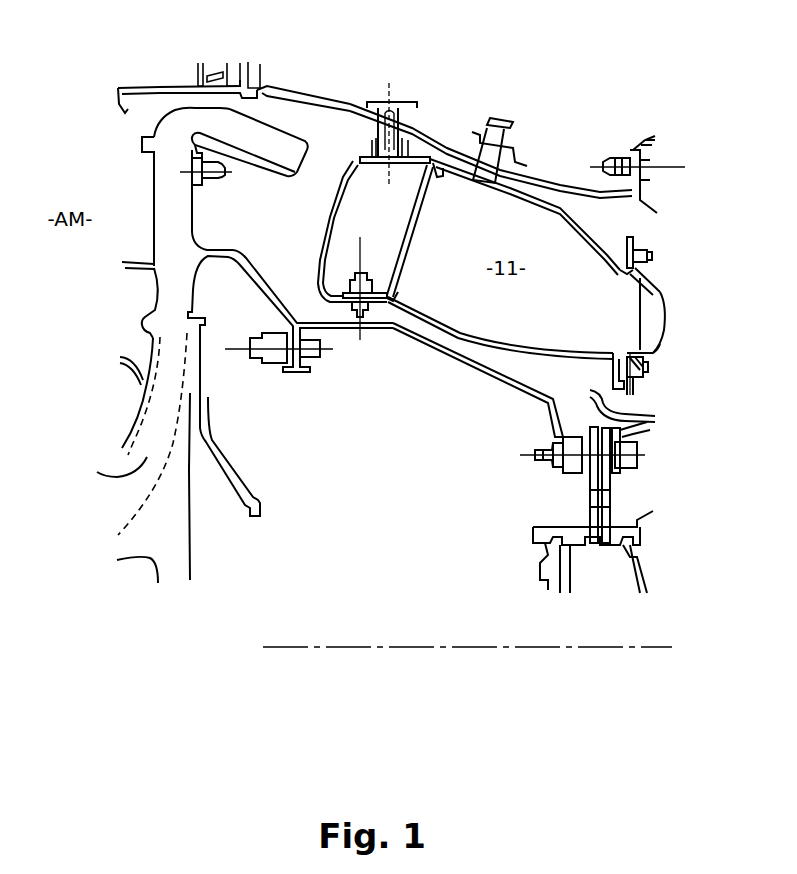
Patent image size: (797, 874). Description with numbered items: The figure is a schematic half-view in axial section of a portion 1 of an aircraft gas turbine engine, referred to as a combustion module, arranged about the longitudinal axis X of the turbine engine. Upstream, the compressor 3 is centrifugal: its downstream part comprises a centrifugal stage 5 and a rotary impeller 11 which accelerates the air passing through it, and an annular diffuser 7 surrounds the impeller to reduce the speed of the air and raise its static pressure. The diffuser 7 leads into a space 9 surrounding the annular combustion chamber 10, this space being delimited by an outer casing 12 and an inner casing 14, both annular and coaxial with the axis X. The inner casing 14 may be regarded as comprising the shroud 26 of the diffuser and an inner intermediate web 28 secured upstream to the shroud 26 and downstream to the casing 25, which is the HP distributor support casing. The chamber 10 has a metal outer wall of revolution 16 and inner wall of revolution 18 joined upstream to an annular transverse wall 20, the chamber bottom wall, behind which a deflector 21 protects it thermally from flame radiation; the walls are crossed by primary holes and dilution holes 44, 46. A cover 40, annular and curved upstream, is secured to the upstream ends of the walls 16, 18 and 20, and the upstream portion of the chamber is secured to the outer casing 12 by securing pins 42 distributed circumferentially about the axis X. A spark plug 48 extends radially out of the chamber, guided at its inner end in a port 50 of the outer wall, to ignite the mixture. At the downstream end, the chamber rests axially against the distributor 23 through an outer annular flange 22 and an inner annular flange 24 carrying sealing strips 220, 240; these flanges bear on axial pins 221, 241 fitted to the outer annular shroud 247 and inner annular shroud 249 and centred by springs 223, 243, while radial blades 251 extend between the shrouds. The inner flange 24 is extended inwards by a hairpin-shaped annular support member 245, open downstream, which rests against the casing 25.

The portion of a gas turbine engine 1 is at (586, 129).
The compressor 3 is at (108, 509).
The centrifugal stage 5 is at (123, 402).
The annular diffuser 7 is at (141, 173).
The space 9 is at (231, 163).
The annular combustion chamber 10 is at (447, 138).
The rotary impeller 11 is at (147, 457).
The outer casing 12 is at (318, 80).
The inner casing 14 is at (516, 389).
The outer wall of revolution 16 is at (560, 212).
The inner wall of revolution 18 is at (503, 342).
The annular transverse wall 20 is at (400, 274).
The deflector 21 is at (412, 254).
The outer annular flange 22 is at (627, 243).
The distributor 23 is at (637, 308).
The inner annular flange 24 is at (603, 377).
The casing 25 is at (633, 433).
The shroud of the diffuser 26 is at (266, 290).
The inner intermediate web 28 is at (450, 330).
The cover 40 is at (330, 224).
The securing pins 42 is at (385, 100).
The primary holes 44 is at (516, 168).
The dilution holes 46 is at (547, 200).
The spark plug 48 is at (485, 122).
The port 50 is at (460, 180).
The sealing strip 220 is at (650, 240).
The axial pin 221 is at (653, 252).
The spring 223 is at (652, 261).
The sealing strip 240 is at (631, 389).
The axial pin 241 is at (650, 373).
The spring 243 is at (640, 360).
The hairpin-shaped annular support member 245 is at (628, 408).
The outer annular shroud 247 is at (630, 273).
The inner annular shroud 249 is at (603, 367).
The radial blades 251 is at (647, 332).
The longitudinal axis X is at (290, 648).